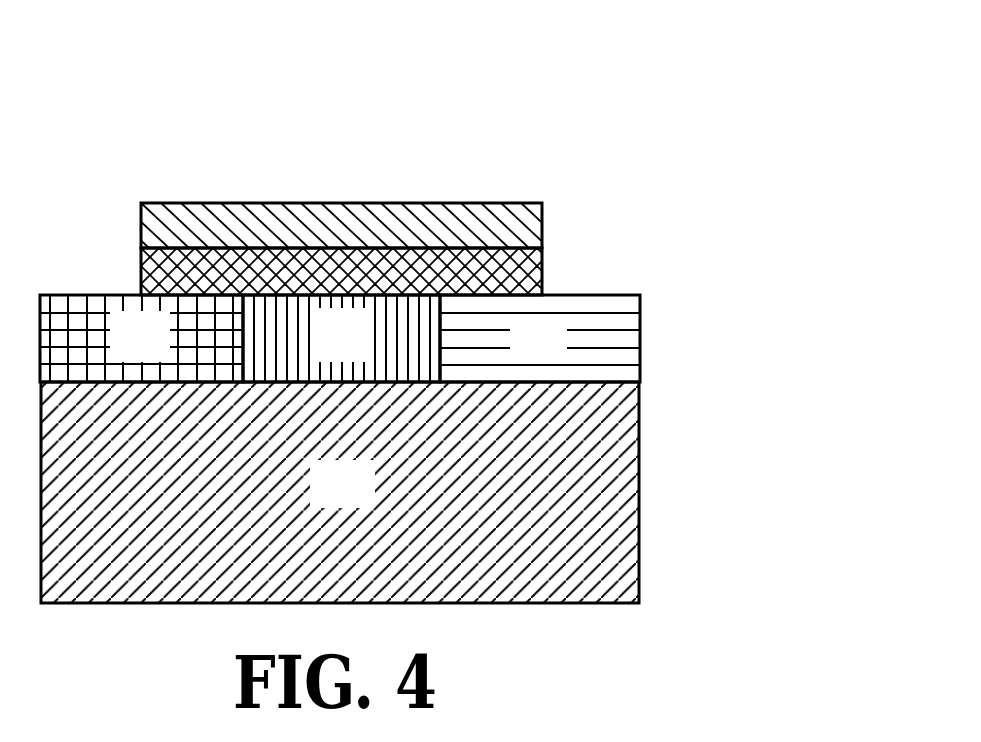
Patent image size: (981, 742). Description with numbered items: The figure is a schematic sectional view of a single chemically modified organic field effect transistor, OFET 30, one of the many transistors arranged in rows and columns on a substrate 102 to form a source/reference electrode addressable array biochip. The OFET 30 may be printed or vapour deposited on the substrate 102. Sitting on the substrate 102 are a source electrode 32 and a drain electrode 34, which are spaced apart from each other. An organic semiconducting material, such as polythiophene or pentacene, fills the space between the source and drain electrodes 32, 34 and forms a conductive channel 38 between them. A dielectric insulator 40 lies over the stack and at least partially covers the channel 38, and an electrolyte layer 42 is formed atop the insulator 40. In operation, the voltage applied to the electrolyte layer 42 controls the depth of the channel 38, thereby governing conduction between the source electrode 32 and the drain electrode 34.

The OFET 30 is at (733, 107).
The source electrode 32 is at (162, 356).
The drain electrode 34 is at (559, 354).
The conductive channel 38 is at (364, 355).
The dielectric insulator 40 is at (545, 269).
The electrolyte layer 42 is at (545, 224).
The substrate 102 is at (372, 505).